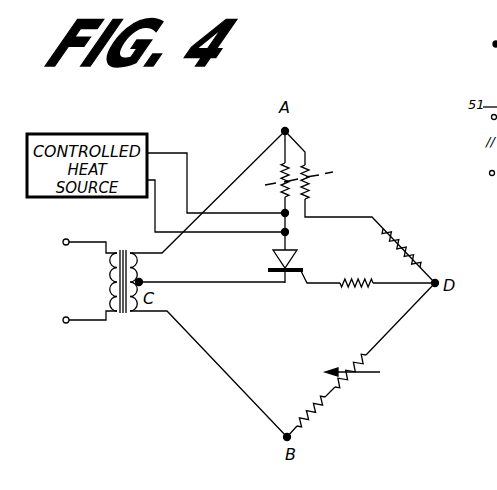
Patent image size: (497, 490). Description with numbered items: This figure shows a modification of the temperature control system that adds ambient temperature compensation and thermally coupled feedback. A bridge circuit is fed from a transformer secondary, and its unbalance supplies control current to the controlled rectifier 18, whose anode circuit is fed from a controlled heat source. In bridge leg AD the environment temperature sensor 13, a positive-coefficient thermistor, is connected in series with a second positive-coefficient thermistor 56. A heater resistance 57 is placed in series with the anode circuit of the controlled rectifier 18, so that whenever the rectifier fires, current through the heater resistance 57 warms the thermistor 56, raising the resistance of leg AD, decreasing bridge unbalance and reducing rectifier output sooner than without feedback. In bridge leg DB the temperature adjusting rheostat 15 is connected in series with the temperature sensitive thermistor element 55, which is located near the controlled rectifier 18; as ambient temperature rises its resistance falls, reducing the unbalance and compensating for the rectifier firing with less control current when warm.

The temperature sensor 13 is at (400, 245).
The temperature adjusting rheostat 15 is at (372, 362).
The controlled rectifier 18 is at (296, 266).
The temperature sensitive thermistor element 55 is at (326, 412).
The thermistor 56 is at (315, 165).
The heater resistance 57 is at (280, 188).